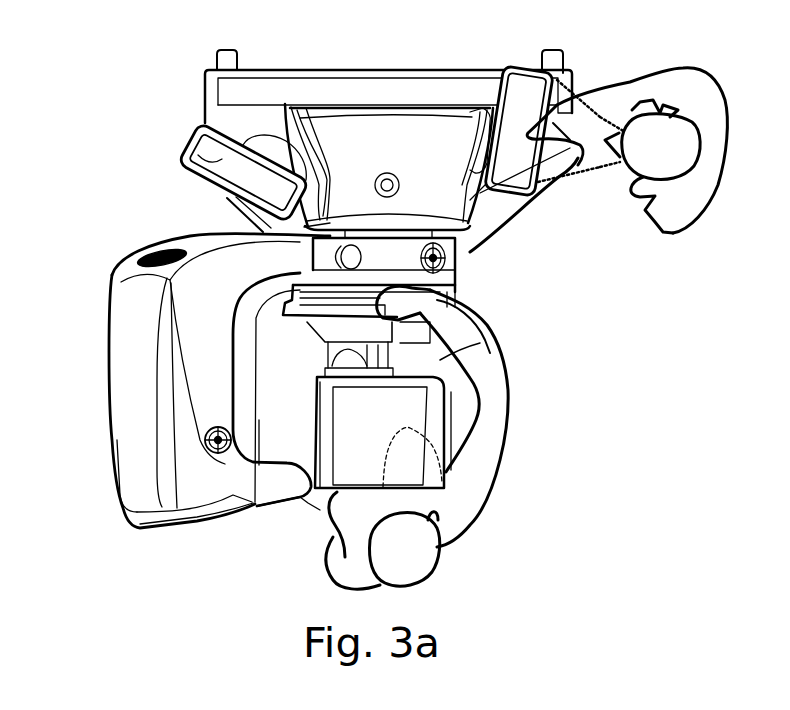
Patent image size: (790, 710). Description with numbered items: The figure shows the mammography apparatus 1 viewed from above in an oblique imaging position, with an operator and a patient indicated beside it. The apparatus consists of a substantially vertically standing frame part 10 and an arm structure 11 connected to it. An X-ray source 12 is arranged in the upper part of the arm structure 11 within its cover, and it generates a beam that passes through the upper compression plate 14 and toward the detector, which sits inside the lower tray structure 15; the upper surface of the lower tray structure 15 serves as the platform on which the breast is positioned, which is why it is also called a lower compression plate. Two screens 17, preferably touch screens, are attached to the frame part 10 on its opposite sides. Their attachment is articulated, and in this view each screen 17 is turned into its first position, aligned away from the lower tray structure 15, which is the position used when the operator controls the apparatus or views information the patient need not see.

The mammography apparatus 1 is at (342, 310).
The frame part 10 is at (424, 128).
The arm structure 11 is at (150, 294).
The X-ray source 12 is at (218, 491).
The upper compression plate 14 is at (295, 502).
The lower tray structure 15 is at (502, 366).
The screen 17 is at (198, 155).